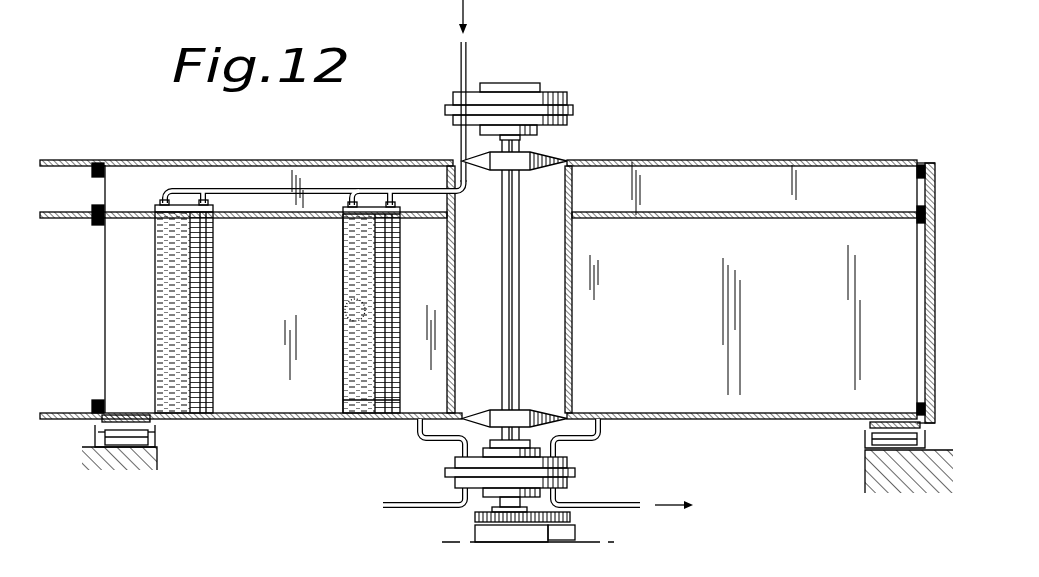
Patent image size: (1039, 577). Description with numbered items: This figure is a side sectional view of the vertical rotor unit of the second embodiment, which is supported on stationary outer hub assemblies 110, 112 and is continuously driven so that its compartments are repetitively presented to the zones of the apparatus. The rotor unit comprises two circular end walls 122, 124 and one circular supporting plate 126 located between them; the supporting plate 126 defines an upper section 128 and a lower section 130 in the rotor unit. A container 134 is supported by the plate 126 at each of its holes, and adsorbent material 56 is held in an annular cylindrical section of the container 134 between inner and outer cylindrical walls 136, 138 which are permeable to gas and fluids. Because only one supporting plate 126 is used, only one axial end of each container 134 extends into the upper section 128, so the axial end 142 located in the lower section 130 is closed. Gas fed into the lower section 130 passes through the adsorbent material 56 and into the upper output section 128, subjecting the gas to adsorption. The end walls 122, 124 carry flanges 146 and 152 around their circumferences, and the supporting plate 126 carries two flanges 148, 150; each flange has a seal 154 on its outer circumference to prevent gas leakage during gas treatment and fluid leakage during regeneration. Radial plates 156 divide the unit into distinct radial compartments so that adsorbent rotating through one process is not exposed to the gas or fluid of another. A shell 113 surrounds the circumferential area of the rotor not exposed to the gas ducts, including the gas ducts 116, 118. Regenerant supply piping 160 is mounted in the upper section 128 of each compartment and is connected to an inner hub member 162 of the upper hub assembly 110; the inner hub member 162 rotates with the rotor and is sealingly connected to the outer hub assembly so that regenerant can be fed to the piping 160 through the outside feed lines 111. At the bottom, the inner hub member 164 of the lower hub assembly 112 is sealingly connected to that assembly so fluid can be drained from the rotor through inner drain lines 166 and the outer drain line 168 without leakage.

The adsorbent material 56 is at (350, 312).
The outer hub assembly 110 is at (544, 93).
The regenerant solution outer feed line 111 is at (460, 70).
The outer hub assembly 112 is at (489, 491).
The shell 113 is at (935, 288).
The gas duct 116 is at (68, 160).
The gas duct 118 is at (65, 421).
The circular end wall 122 is at (204, 160).
The circular end wall 124 is at (258, 419).
The supporting plate 126 is at (240, 211).
The upper section 128 is at (147, 180).
The lower section 130 is at (124, 280).
The container 134 is at (336, 242).
The inner cylindrical wall 136 is at (342, 268).
The outer cylindrical wall 138 is at (401, 257).
The axial end 142 is at (370, 408).
The flange 146 is at (915, 170).
The flange 148 is at (915, 212).
The flange 150 is at (917, 226).
The flange 152 is at (912, 410).
The seal 154 is at (920, 166).
The radial plate 156 is at (235, 372).
The regenerant supply piping 160 is at (410, 188).
The inner hub member 162 is at (570, 122).
The inner hub member 164 is at (455, 462).
The inner drain line 166 is at (420, 432).
The outer drain line 168 is at (611, 504).